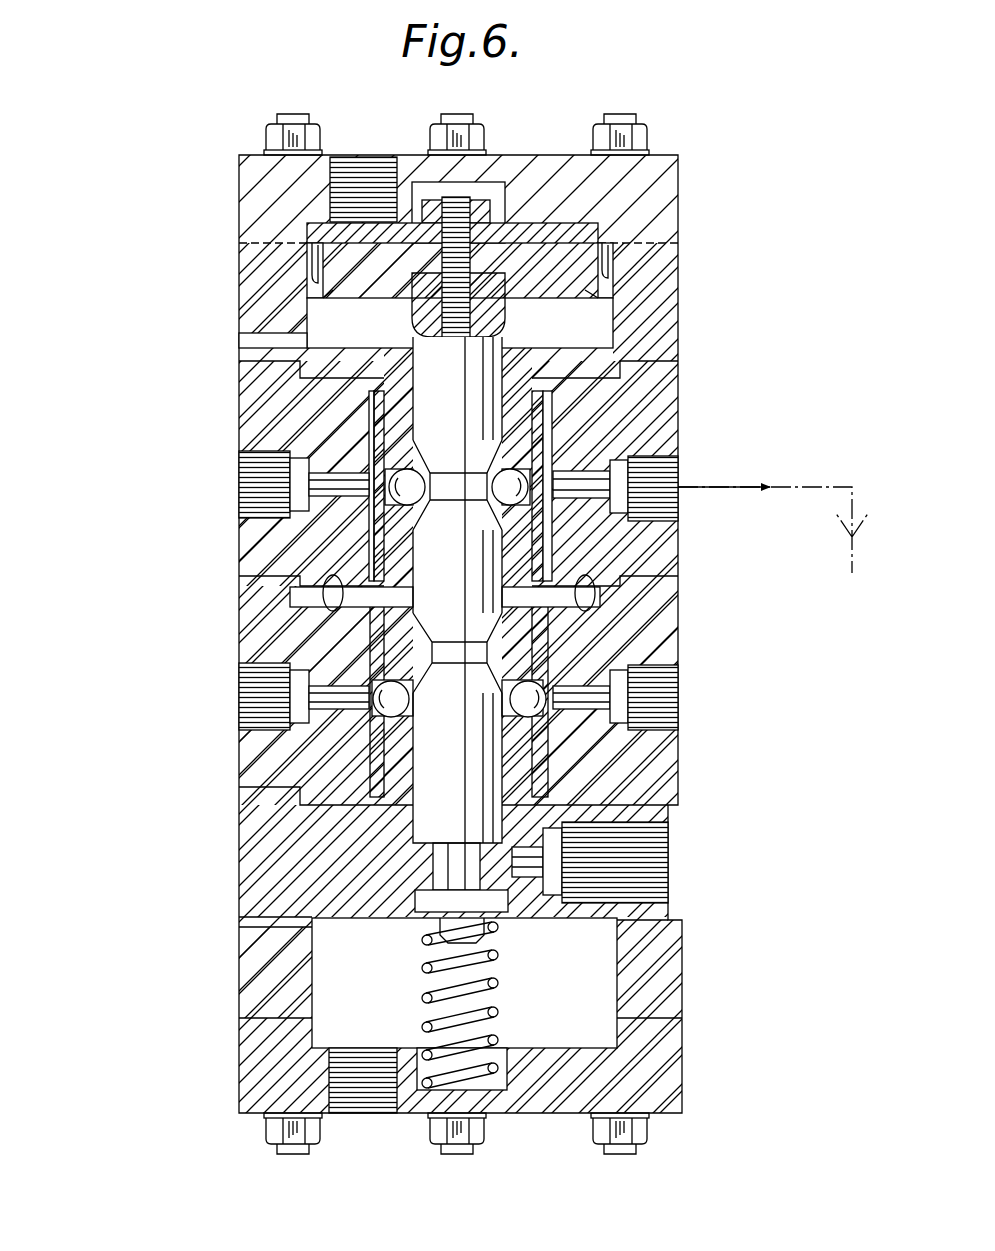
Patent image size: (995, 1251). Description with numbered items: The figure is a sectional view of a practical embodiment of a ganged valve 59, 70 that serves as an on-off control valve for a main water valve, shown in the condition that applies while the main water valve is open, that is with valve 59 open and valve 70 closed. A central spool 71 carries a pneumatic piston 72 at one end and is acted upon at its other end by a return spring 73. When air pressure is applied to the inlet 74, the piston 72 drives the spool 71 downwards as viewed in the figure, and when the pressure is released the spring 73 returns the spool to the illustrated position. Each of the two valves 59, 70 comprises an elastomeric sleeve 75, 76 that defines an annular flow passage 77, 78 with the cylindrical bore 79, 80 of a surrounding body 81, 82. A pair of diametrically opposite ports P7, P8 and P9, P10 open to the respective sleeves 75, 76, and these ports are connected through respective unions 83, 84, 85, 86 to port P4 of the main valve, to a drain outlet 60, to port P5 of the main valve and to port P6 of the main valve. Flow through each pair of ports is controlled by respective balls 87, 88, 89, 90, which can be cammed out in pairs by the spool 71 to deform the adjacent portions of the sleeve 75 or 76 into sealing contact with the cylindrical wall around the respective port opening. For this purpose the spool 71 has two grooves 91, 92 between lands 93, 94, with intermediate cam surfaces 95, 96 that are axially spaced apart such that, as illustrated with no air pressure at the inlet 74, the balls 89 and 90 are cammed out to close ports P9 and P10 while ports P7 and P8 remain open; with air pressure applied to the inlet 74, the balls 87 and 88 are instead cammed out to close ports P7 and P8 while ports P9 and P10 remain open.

The valve 59 is at (214, 370).
The drain outlet 60 is at (855, 535).
The valve 70 is at (238, 748).
The central spool 71 is at (405, 594).
The pneumatic piston 72 is at (340, 232).
The return spring 73 is at (430, 978).
The inlet 74 is at (350, 172).
The elastomeric sleeve 75 is at (372, 408).
The elastomeric sleeve 76 is at (378, 662).
The annular flow passage 77 is at (545, 410).
The annular flow passage 78 is at (552, 617).
The cylindrical bore 79 is at (368, 536).
The cylindrical bore 80 is at (368, 776).
The body 81 is at (672, 547).
The body 82 is at (648, 770).
The union 83 is at (250, 470).
The union 84 is at (648, 466).
The union 85 is at (270, 722).
The union 86 is at (648, 710).
The ball 87 is at (398, 472).
The ball 88 is at (525, 470).
The ball 89 is at (383, 688).
The ball 90 is at (545, 688).
The groove 91 is at (450, 480).
The groove 92 is at (449, 645).
The land 93 is at (458, 398).
The land 94 is at (458, 782).
The cam surface 95 is at (452, 462).
The cam surface 96 is at (450, 680).
The port P4 of the main valve P4 is at (240, 487).
The port P5 of the main valve P5 is at (240, 700).
The port P6 of the main valve P6 is at (678, 698).
The port P7 is at (345, 497).
The port P8 is at (580, 498).
The port P9 is at (340, 712).
The port P10 is at (590, 710).